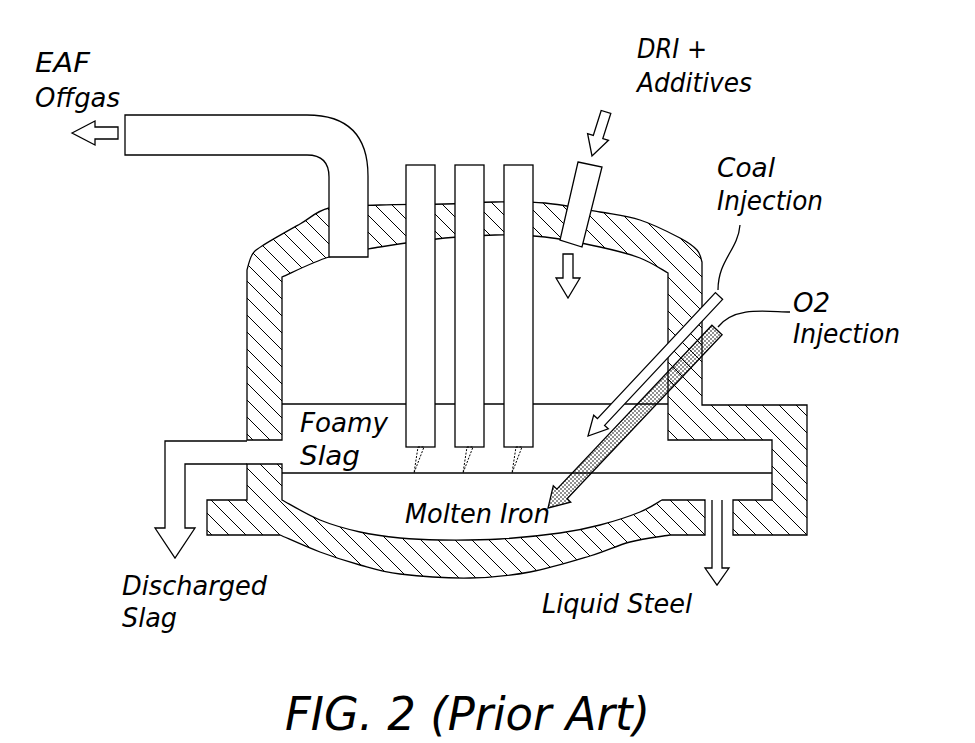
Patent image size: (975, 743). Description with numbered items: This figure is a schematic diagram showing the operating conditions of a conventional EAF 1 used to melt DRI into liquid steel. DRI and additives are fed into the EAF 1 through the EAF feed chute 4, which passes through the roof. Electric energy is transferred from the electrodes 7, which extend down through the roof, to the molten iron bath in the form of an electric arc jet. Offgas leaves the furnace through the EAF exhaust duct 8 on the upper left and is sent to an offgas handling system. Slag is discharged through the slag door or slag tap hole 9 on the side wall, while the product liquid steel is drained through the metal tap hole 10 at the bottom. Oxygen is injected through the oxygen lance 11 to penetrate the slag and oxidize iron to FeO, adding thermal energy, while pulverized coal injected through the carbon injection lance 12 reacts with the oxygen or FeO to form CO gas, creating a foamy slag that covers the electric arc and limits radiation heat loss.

The EAF 1 is at (247, 360).
The EAF feed chute 4 is at (598, 188).
The electrodes 7 is at (470, 165).
The EAF exhaust duct 8 is at (220, 115).
The slag tap hole 9 is at (245, 455).
The metal tap hole 10 is at (735, 525).
The oxygen lance 11 is at (703, 368).
The carbon injection lance 12 is at (633, 372).